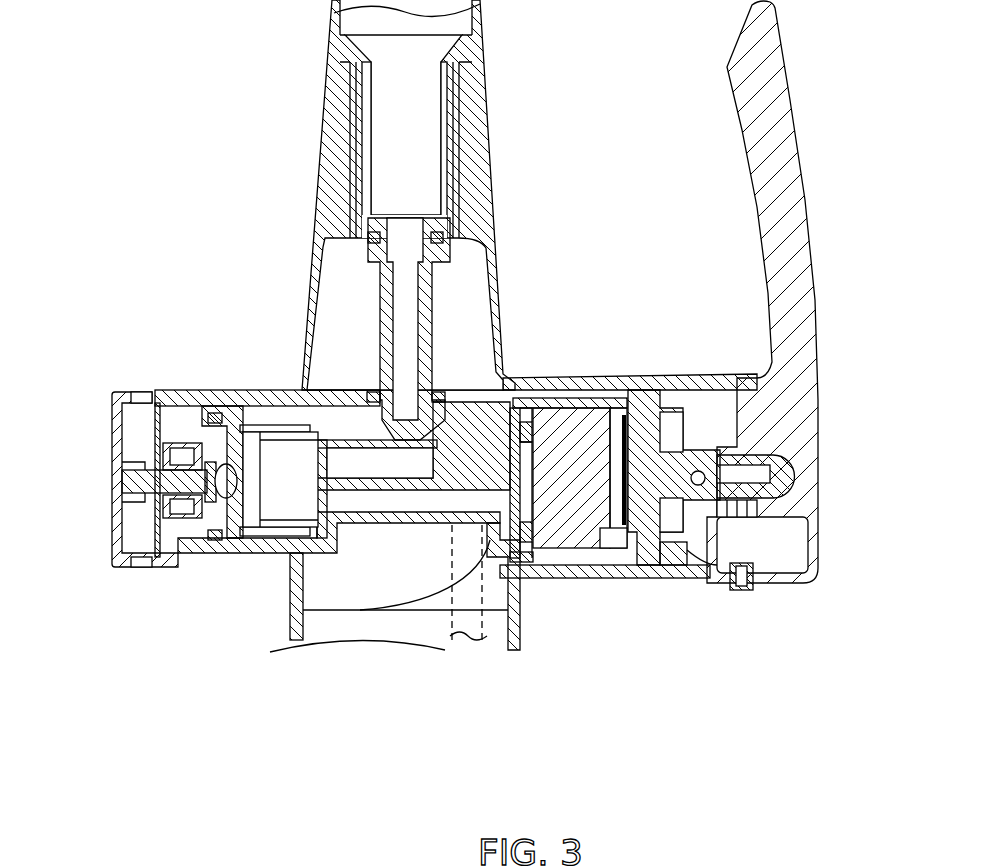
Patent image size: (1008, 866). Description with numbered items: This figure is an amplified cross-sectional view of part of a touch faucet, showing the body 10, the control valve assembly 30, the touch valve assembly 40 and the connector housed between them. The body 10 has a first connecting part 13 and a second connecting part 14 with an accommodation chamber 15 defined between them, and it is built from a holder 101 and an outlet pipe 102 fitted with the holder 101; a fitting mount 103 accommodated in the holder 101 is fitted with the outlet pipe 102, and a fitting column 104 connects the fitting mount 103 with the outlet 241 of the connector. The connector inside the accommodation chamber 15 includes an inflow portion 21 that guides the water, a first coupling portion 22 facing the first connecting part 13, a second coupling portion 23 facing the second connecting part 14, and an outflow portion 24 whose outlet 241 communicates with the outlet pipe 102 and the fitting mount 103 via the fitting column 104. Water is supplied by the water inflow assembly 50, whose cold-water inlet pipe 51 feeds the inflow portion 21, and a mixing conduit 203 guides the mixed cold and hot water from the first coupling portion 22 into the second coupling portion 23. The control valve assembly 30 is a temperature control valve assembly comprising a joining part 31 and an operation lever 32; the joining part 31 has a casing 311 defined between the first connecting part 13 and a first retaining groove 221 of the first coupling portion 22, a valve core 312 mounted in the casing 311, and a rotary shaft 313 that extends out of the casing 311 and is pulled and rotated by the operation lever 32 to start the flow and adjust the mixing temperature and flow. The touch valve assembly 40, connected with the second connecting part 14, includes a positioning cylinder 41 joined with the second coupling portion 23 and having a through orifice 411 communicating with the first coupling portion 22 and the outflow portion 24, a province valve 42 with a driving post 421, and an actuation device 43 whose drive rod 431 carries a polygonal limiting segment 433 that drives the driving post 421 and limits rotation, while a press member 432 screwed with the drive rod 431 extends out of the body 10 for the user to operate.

The body 10 is at (452, 220).
The holder 101 is at (408, 195).
The outlet pipe 102 is at (478, 37).
The fitting mount 103 is at (453, 97).
The fitting column 104 is at (433, 285).
The first connecting part 13 is at (628, 378).
The second connecting part 14 is at (198, 388).
The accommodation chamber 15 is at (470, 315).
The inflow portion 21 is at (363, 510).
The first coupling portion 22 is at (517, 557).
The second coupling portion 23 is at (310, 556).
The mixing conduit 203 is at (346, 415).
The outflow portion 24 is at (382, 385).
The outlet 241 is at (430, 392).
The first retaining groove 221 is at (577, 400).
The control valve assembly 30 is at (687, 326).
The joining part 31 is at (615, 523).
The casing 311 is at (612, 553).
The valve core 312 is at (568, 542).
The rotary shaft 313 is at (760, 492).
The operation lever 32 is at (800, 180).
The touch valve assembly 40 is at (182, 505).
The positioning cylinder 41 is at (260, 530).
The through orifice 411 is at (234, 443).
The province valve 42 is at (144, 554).
The driving post 421 is at (230, 445).
The actuation device 43 is at (155, 537).
The drive rod 431 is at (168, 552).
The press member 432 is at (103, 552).
The limiting segment 433 is at (200, 531).
The water inflow assembly 50 is at (466, 660).
The cold-water inlet pipe 51 is at (450, 628).